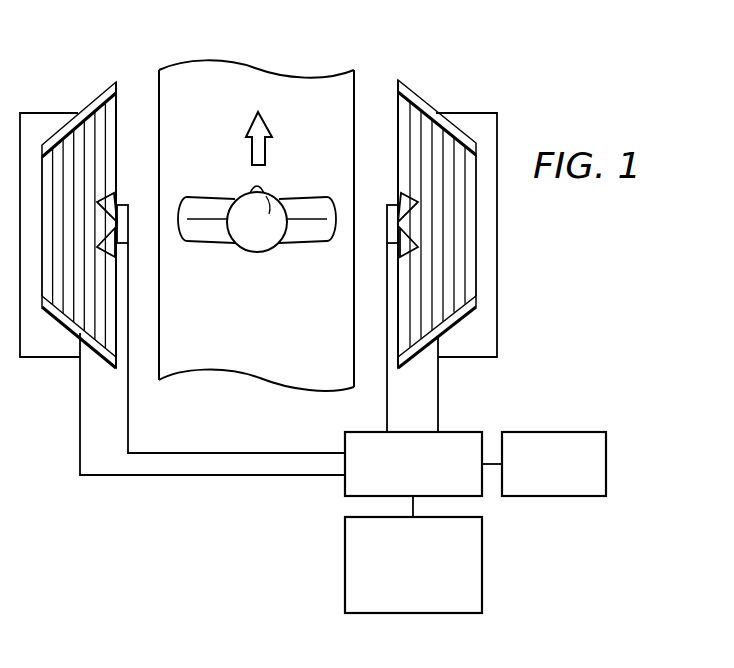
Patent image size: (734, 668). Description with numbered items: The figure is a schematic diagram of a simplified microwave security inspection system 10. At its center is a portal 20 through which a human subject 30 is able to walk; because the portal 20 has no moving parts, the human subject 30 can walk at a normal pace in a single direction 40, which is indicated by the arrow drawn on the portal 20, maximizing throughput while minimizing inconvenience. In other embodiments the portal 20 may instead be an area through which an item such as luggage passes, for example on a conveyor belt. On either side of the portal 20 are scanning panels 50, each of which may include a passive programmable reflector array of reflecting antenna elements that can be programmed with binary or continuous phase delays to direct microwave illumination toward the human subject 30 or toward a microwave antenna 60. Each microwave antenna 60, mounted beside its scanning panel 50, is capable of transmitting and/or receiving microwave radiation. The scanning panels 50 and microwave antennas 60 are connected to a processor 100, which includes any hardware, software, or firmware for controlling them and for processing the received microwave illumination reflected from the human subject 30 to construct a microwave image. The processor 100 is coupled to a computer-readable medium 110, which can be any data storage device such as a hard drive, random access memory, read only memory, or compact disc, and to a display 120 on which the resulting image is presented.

The microwave security inspection system 10 is at (552, 232).
The portal 20 is at (358, 52).
The human subject 30 is at (257, 252).
The single direction 40 is at (250, 150).
The scanning panel 50 is at (90, 103).
The microwave antenna 60 is at (123, 203).
The processor 100 is at (345, 487).
The computer-readable medium 110 is at (482, 562).
The display 120 is at (606, 473).